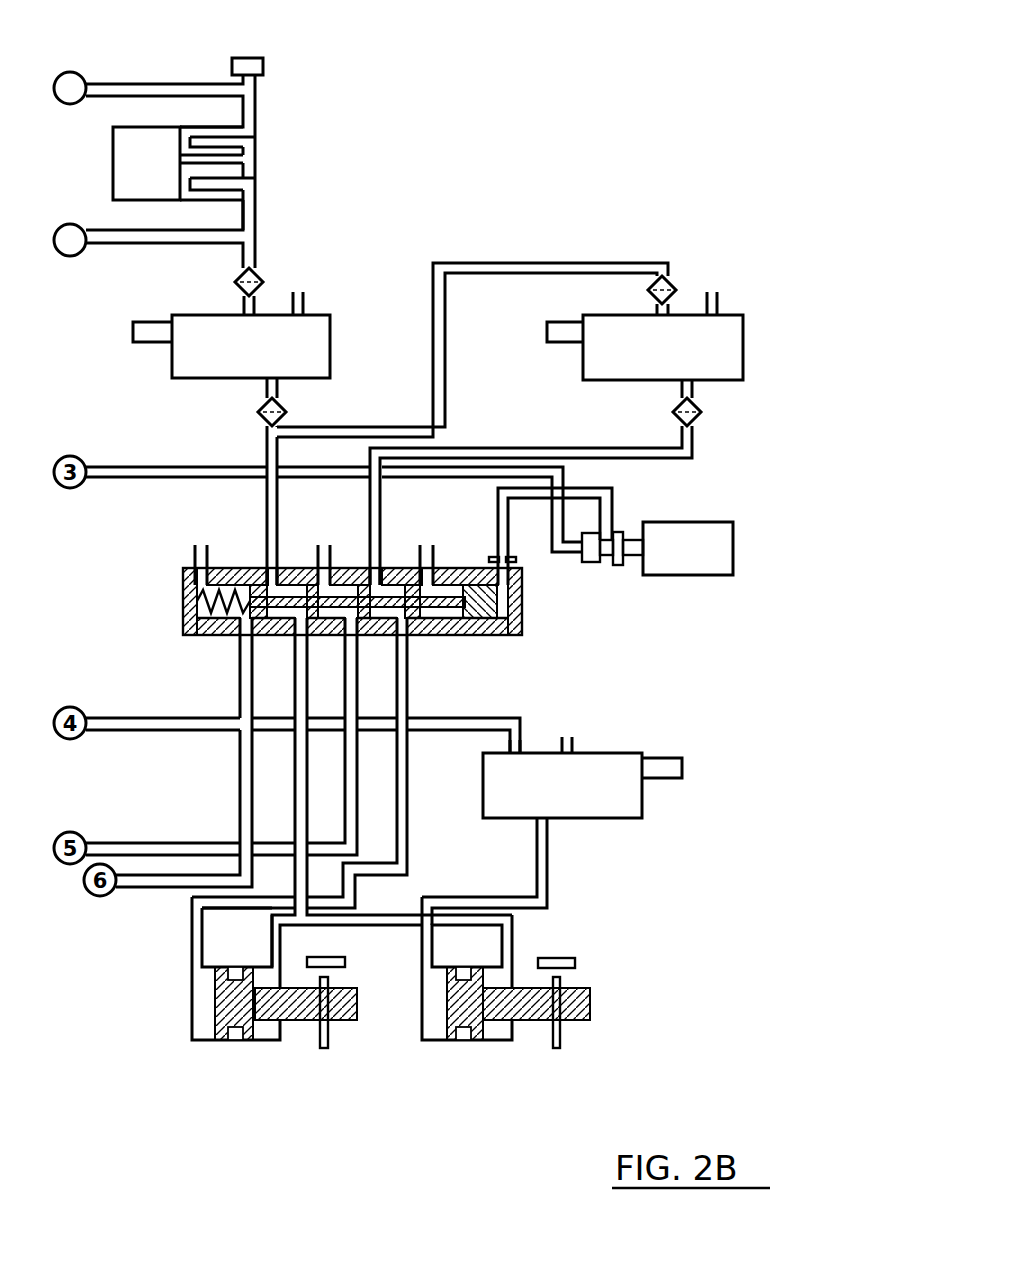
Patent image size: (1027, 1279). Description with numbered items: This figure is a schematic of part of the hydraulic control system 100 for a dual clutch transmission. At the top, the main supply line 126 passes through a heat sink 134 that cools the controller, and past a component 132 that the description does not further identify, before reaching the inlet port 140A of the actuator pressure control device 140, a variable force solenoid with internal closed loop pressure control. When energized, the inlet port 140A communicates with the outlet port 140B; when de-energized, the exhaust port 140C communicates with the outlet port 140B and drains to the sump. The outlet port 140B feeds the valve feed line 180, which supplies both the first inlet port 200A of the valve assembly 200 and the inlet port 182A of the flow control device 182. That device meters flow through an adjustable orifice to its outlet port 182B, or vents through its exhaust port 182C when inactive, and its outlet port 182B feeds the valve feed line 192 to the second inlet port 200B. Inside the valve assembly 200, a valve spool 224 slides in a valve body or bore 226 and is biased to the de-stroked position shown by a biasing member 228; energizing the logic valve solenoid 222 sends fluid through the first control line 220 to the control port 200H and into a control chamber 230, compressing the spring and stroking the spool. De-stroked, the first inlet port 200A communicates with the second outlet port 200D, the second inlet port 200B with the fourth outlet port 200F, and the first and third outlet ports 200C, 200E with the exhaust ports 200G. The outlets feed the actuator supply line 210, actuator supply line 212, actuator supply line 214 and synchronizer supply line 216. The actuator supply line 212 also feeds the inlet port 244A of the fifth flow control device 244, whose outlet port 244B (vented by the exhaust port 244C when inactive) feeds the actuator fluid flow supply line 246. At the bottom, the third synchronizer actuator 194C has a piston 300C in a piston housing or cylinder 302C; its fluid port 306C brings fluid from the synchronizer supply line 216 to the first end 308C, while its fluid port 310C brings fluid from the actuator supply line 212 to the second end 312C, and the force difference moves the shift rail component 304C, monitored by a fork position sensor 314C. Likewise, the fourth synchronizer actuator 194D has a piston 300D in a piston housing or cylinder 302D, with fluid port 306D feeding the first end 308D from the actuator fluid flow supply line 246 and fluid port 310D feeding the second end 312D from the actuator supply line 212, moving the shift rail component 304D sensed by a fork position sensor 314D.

The hydraulic control system 100 is at (591, 73).
The main supply line 126 is at (107, 82).
The fluid inlet connection 132 is at (263, 67).
The heat sink 134 is at (168, 180).
The actuator pressure control device 140 is at (335, 352).
The inlet port 140A is at (243, 312).
The outlet port 140B is at (262, 383).
The exhaust port 140C is at (307, 305).
The valve feed line 180 is at (266, 459).
The flow control device 182 is at (745, 356).
The inlet port 182A is at (657, 312).
The outlet port 182B is at (680, 385).
The exhaust port 182C is at (720, 308).
The valve feed line 192 is at (542, 447).
The valve assembly 200 is at (370, 593).
The first inlet port 200A is at (270, 572).
The second inlet port 200B is at (373, 558).
The first outlet port 200C is at (246, 637).
The second outlet port 200D is at (300, 637).
The third outlet port 200E is at (353, 640).
The fourth outlet port 200F is at (403, 638).
The exhaust ports 200G is at (196, 560).
The control port 200H is at (498, 560).
The actuator supply line 210 is at (238, 765).
The actuator supply line 212 is at (293, 771).
The actuator supply line 214 is at (345, 828).
The synchronizer supply line 216 is at (407, 815).
The first control line 220 is at (592, 487).
The logic valve solenoid 222 is at (735, 552).
The valve spool 224 is at (197, 596).
The valve body or bore 226 is at (470, 637).
The biasing member 228 is at (208, 618).
The control chamber 230 is at (524, 600).
The fifth flow control device 244 is at (648, 805).
The inlet port 244A is at (516, 750).
The outlet port 244B is at (550, 821).
The exhaust port 244C is at (577, 746).
The actuator fluid flow supply line 246 is at (552, 880).
The third synchronizer actuator 194C is at (269, 1010).
The fourth synchronizer actuator 194D is at (512, 1013).
The piston 300C is at (237, 937).
The piston 300D is at (468, 946).
The piston housing or cylinder 302C is at (216, 1041).
The piston housing or cylinder 302D is at (447, 1041).
The shift rail component 304C is at (330, 1048).
The shift rail component 304D is at (562, 1040).
The fluid port 306C is at (207, 995).
The fluid port 306D is at (432, 975).
The first end 308C is at (193, 1015).
The first end 308D is at (420, 1025).
The fluid port 310C is at (291, 960).
The fluid port 310D is at (515, 960).
The second end 312C is at (279, 1041).
The second end 312D is at (512, 1042).
The fork position sensor 314C is at (347, 968).
The fork position sensor 314D is at (578, 964).